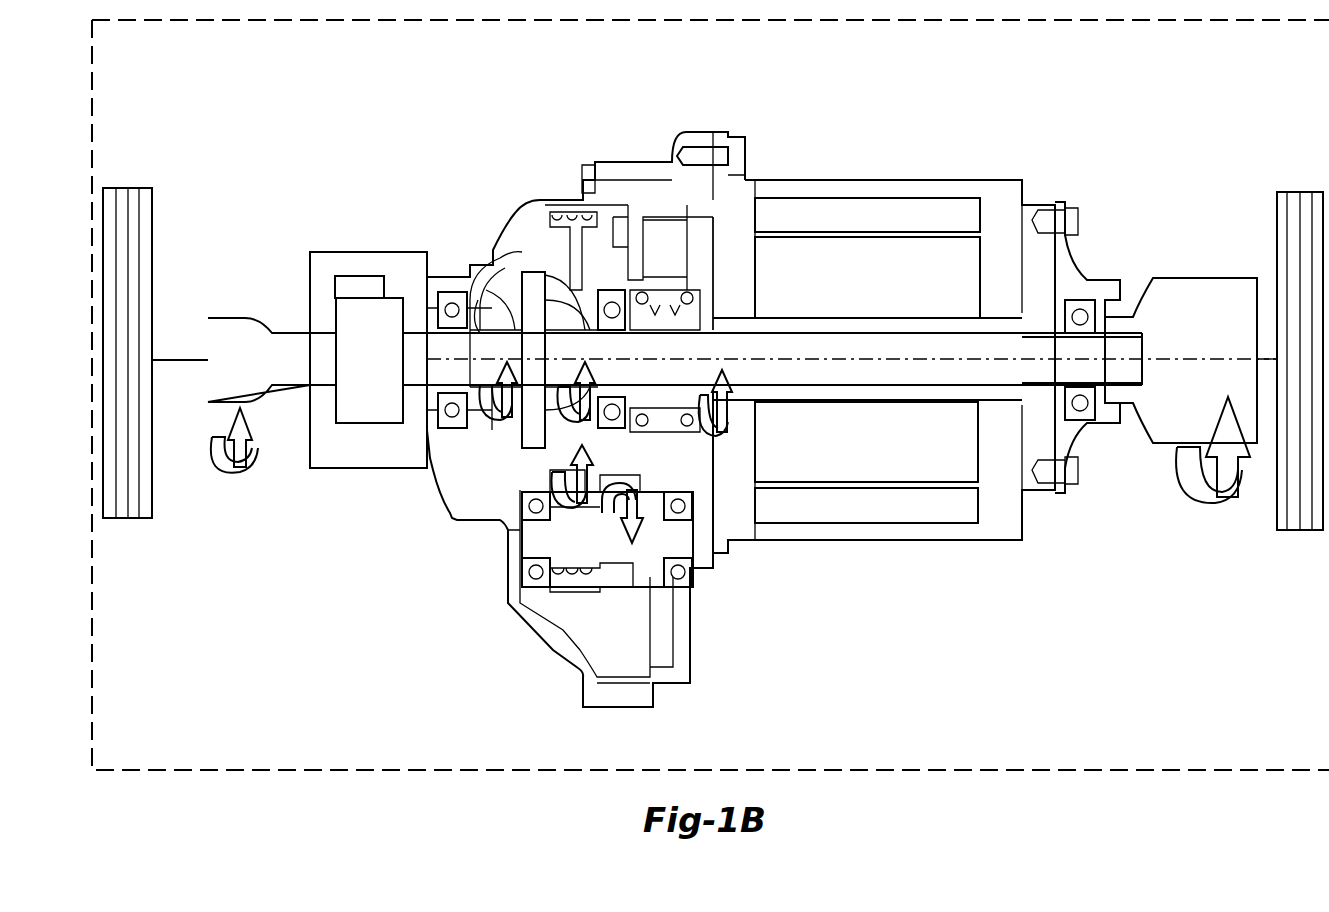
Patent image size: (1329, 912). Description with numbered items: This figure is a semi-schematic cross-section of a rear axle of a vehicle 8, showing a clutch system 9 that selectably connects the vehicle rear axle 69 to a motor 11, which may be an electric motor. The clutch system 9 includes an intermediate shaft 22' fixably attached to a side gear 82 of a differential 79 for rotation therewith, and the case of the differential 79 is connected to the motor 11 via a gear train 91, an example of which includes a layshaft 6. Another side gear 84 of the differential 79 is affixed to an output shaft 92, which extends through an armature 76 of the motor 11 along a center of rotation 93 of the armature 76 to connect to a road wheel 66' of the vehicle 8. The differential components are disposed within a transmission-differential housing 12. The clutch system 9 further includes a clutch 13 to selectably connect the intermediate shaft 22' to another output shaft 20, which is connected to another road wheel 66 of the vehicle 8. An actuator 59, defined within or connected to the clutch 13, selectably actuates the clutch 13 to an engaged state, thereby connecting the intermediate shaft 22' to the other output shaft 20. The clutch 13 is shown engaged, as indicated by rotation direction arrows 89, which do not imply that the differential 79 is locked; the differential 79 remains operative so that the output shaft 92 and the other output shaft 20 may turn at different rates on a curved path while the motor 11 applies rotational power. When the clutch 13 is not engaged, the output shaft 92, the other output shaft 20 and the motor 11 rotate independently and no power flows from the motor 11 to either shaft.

The layshaft 6 is at (660, 548).
The vehicle 8 is at (886, 769).
The clutch system 9 is at (374, 244).
The motor 11 is at (816, 551).
The transmission-differential housing 12 is at (535, 650).
The clutch 13 is at (384, 364).
The other output shaft 20 is at (286, 344).
The intermediate shaft 22' is at (852, 359).
The actuator 59 is at (347, 276).
The other road wheel 66 is at (155, 320).
The road wheel 66' is at (1290, 326).
The vehicle rear axle 69 is at (431, 536).
The armature 76 is at (875, 468).
The differential 79 is at (531, 265).
The side gear 82 is at (512, 290).
The side gear 84 is at (560, 300).
The rotation direction arrows 89 is at (247, 463).
The gear train 91 is at (577, 587).
The output shaft 92 is at (870, 371).
The center of rotation 93 is at (948, 359).